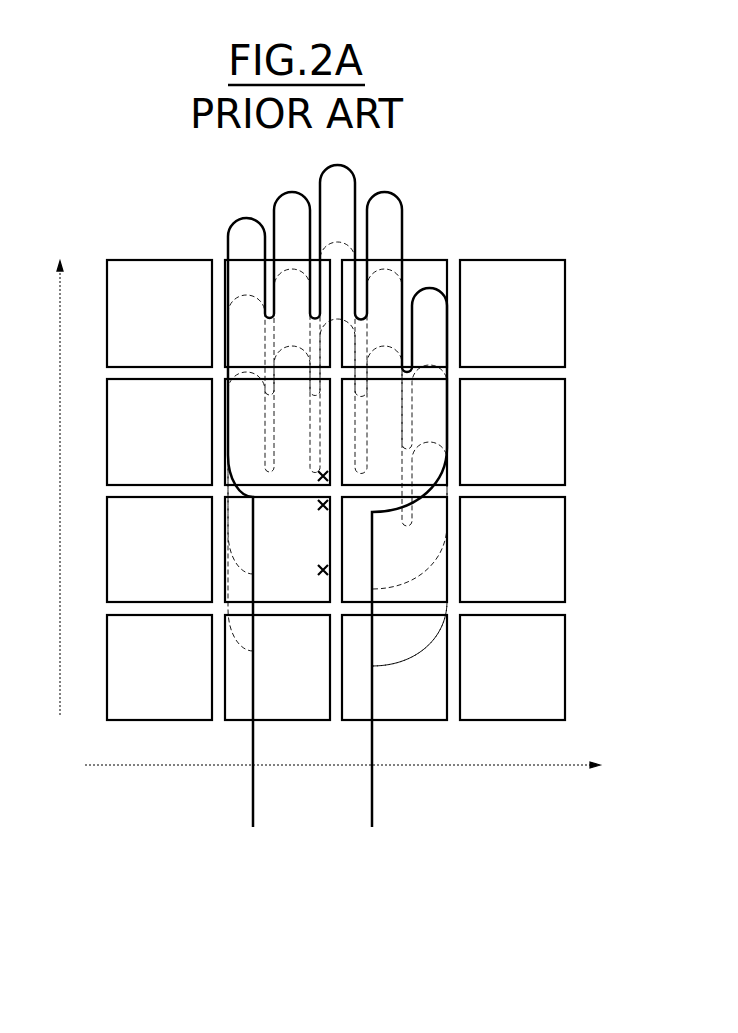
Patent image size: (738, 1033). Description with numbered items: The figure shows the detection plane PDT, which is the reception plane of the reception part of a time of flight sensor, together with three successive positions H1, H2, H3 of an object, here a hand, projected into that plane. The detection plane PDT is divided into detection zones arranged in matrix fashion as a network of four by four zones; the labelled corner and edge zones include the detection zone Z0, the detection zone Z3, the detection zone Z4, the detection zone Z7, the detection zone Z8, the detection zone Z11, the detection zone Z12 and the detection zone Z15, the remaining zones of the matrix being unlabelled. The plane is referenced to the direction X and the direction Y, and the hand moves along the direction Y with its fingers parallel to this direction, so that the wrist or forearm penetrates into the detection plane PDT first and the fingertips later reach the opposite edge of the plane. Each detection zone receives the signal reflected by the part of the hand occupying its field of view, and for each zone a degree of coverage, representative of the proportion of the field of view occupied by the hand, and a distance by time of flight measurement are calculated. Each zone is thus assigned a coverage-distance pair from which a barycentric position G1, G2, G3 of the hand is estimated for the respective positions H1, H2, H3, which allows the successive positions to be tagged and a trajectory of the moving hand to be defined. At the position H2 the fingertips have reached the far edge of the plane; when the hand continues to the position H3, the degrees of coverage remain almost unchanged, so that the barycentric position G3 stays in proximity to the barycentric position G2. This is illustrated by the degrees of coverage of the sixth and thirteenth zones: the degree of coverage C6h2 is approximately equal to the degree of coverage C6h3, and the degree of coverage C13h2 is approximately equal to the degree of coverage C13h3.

The detection plane PDT is at (562, 218).
The detection zone Z0 is at (159, 313).
The detection zone Z3 is at (512, 313).
The detection zone Z4 is at (159, 432).
The detection zone Z7 is at (512, 432).
The detection zone Z8 is at (159, 549).
The detection zone Z11 is at (512, 549).
The detection zone Z12 is at (159, 667).
The detection zone Z15 is at (512, 667).
The barycentric position G1 is at (306, 576).
The barycentric position G2 is at (306, 511).
The barycentric position G3 is at (306, 471).
The object position H1 is at (440, 653).
The object position H2 is at (440, 577).
The object position H3 is at (440, 537).
The degree of coverage C6h2 is at (392, 410).
The degree of coverage C6h3 is at (277, 432).
The degree of coverage C13h2 is at (267, 690).
The degree of coverage C13h3 is at (394, 667).
The direction X is at (342, 777).
The direction Y is at (51, 488).